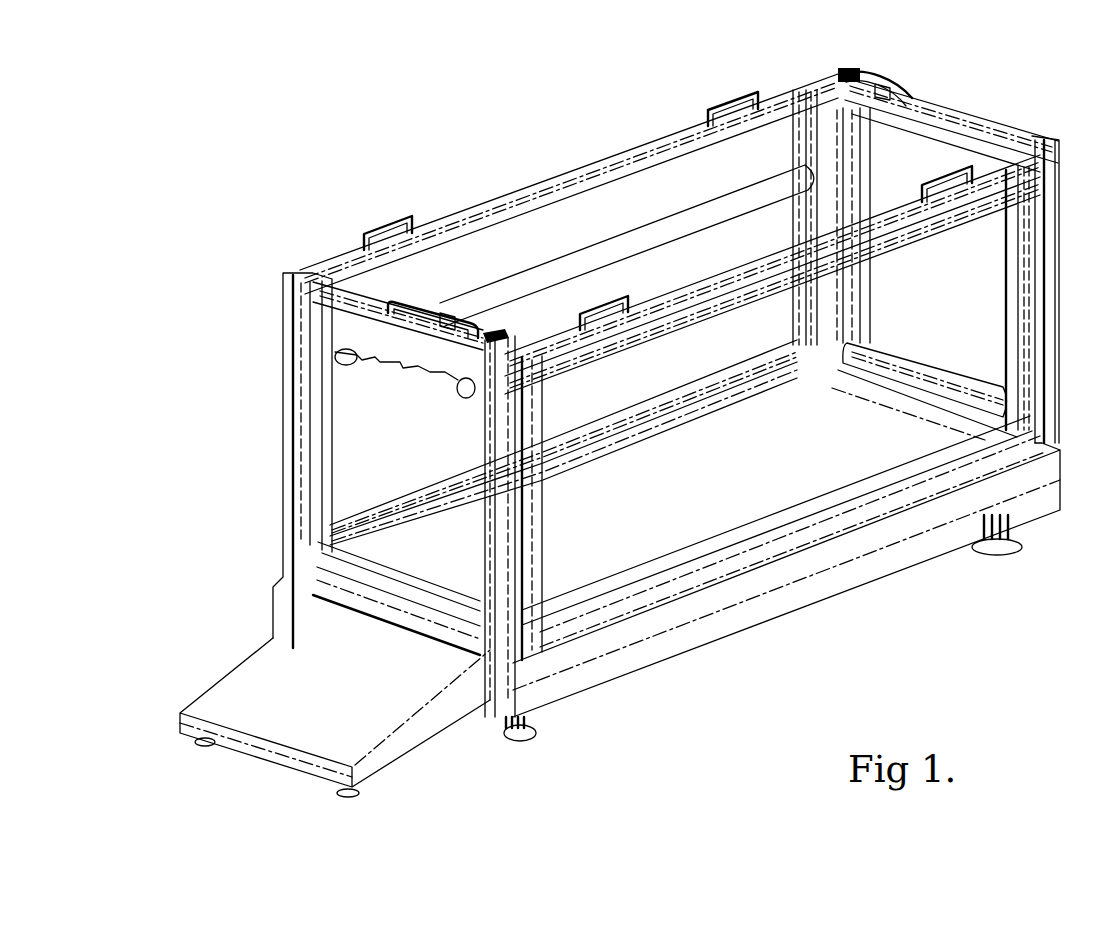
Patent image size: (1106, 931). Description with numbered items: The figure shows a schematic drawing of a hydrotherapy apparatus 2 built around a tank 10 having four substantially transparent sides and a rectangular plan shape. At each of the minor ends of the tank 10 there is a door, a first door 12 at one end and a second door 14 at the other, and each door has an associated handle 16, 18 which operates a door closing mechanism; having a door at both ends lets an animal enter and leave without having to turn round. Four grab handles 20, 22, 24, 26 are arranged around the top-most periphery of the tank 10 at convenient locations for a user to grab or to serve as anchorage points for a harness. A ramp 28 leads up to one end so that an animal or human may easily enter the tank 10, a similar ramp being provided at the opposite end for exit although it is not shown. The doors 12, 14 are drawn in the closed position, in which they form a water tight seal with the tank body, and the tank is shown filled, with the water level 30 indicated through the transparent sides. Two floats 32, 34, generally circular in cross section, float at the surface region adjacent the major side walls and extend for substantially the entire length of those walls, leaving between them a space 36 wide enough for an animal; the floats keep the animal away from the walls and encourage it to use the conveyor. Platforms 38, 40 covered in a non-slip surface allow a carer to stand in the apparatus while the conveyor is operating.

The hydrotherapy apparatus 2 is at (222, 300).
The tank 10 is at (283, 385).
The first door 12 is at (348, 490).
The second door 14 is at (936, 320).
The handle 16 is at (423, 305).
The handle 18 is at (903, 95).
The grab handle 20 is at (368, 250).
The grab handle 22 is at (735, 98).
The grab handle 24 is at (633, 347).
The grab handle 26 is at (943, 178).
The ramp 28 is at (313, 679).
The water level 30 is at (400, 368).
The float 32 is at (678, 230).
The float 34 is at (760, 292).
The space 36 is at (377, 404).
The platform 38 is at (345, 520).
The platform 40 is at (597, 583).